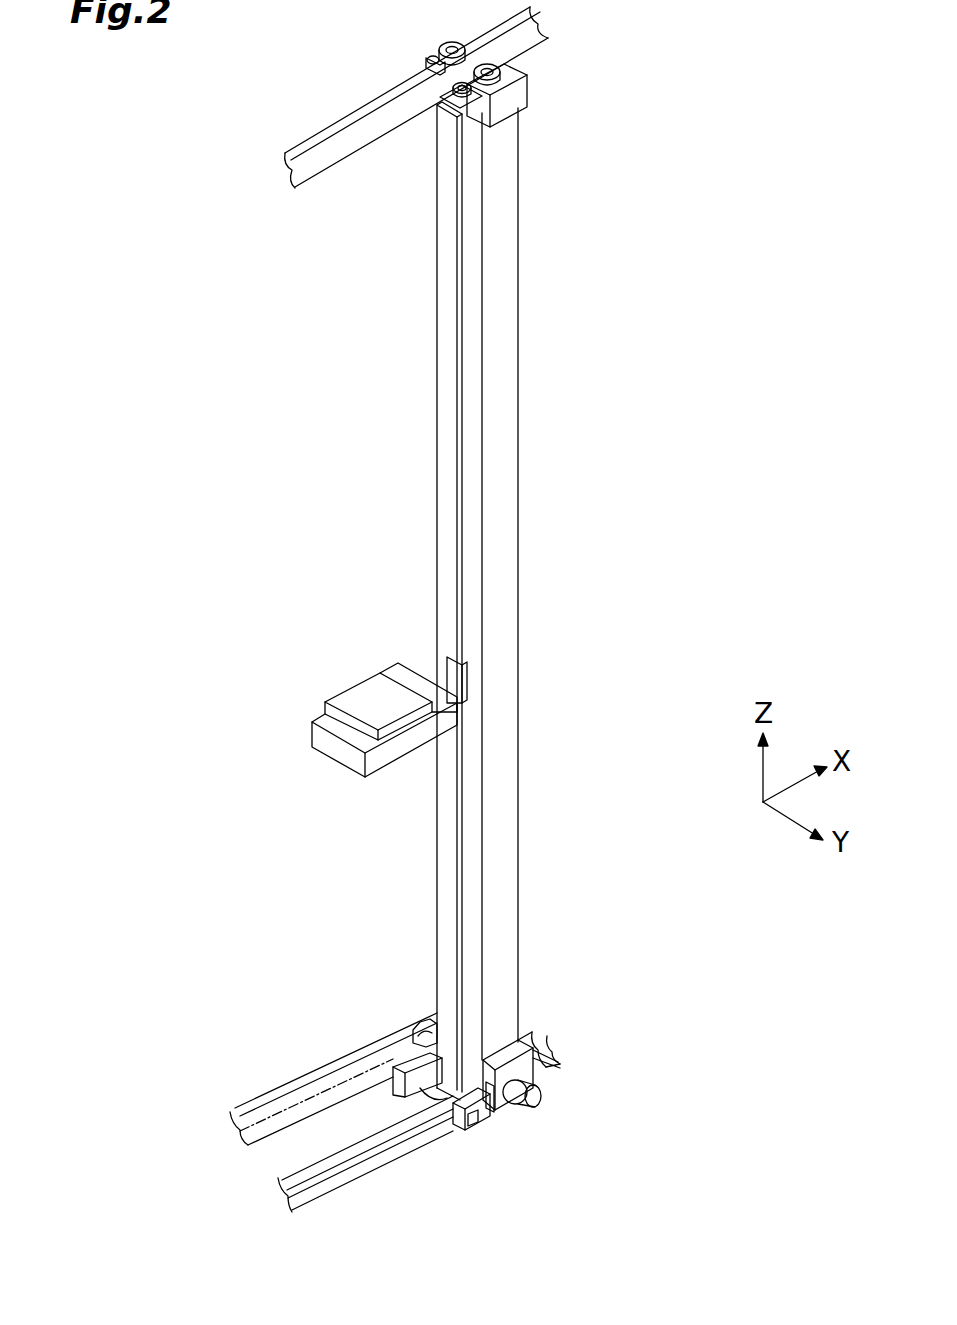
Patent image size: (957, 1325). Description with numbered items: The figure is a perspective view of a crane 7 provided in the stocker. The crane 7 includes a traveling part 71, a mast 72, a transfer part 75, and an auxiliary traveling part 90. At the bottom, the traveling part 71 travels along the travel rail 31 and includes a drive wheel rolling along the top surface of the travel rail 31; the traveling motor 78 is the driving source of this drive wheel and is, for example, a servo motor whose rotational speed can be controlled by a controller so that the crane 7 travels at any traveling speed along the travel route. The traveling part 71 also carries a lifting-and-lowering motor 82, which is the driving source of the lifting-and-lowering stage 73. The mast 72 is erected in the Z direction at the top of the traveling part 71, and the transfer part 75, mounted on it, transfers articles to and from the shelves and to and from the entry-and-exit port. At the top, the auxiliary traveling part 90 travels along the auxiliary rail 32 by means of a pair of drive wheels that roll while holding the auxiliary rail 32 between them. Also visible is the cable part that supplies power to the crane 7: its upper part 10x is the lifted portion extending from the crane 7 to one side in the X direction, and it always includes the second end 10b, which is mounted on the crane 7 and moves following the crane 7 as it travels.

The crane 7 is at (588, 512).
The upper part 10x is at (278, 1083).
The second end 10b is at (423, 1010).
The travel rail 31 is at (357, 1152).
The auxiliary rail 32 is at (343, 157).
The traveling part 71 is at (487, 1132).
The mast 72 is at (433, 435).
The lifting-and-lowering stage 73 is at (337, 750).
The transfer part 75 is at (340, 678).
The traveling motor 78 is at (537, 1107).
The lifting-and-lowering motor 82 is at (415, 1028).
The auxiliary traveling part 90 is at (545, 95).